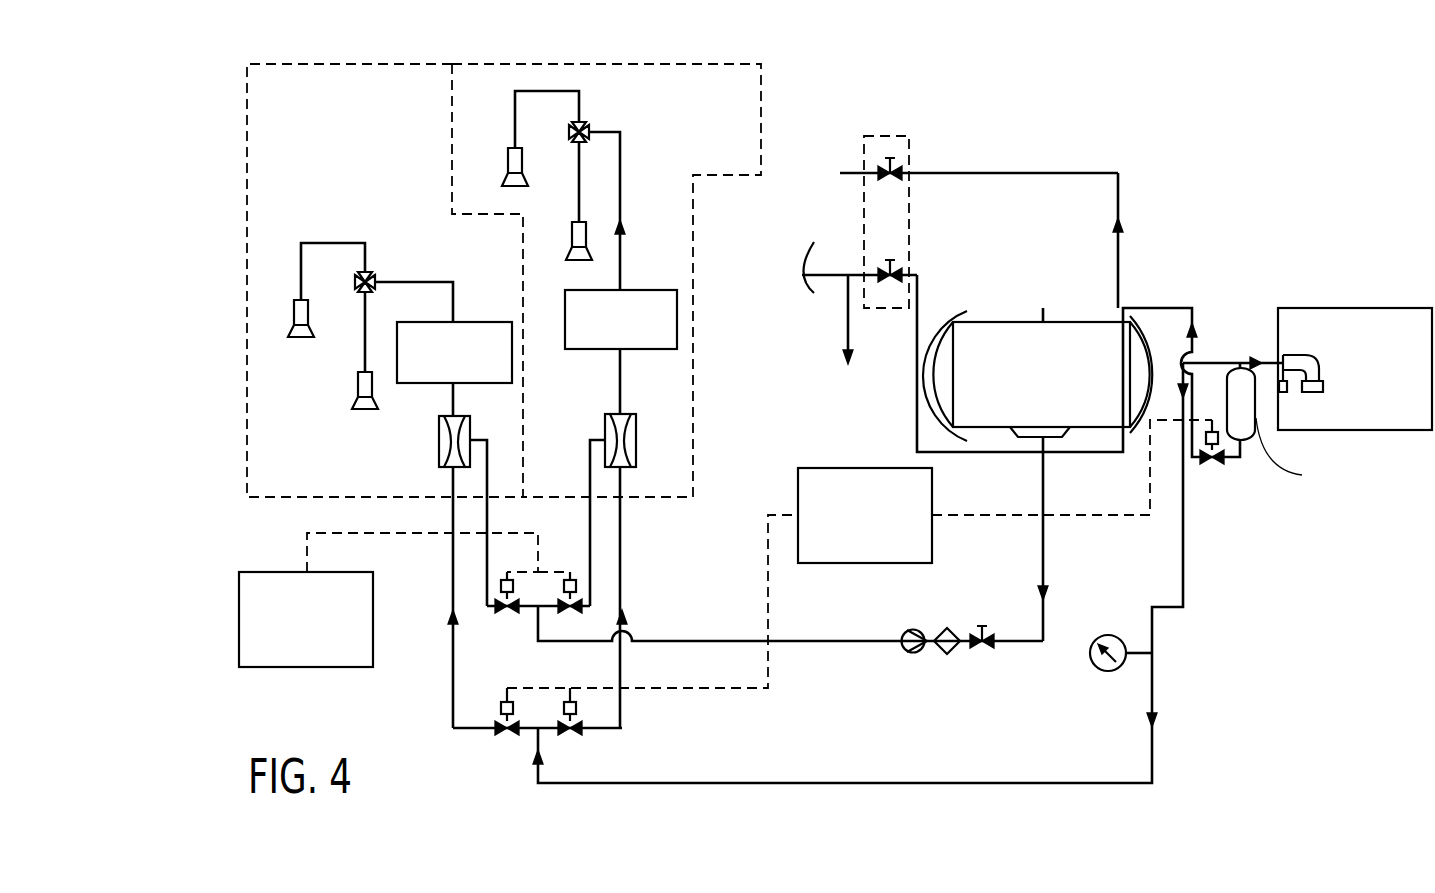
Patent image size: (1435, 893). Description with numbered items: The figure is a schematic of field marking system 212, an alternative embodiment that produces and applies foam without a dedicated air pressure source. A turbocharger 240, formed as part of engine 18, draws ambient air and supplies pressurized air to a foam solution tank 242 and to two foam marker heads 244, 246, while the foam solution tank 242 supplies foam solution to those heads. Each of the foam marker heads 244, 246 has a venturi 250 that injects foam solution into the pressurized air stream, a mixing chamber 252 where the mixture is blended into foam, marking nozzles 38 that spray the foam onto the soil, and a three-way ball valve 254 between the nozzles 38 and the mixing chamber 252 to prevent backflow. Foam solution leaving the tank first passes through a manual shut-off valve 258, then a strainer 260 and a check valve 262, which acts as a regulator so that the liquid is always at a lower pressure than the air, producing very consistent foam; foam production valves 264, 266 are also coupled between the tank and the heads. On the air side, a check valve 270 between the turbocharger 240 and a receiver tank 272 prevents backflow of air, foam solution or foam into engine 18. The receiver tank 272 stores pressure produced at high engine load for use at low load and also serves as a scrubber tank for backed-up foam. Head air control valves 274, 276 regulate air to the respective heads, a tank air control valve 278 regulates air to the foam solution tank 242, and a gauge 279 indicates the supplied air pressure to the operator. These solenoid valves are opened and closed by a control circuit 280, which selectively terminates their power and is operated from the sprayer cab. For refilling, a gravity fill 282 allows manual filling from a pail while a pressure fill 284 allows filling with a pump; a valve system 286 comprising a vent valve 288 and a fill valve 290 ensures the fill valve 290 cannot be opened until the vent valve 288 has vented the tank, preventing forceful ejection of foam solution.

The engine 18 is at (1396, 307).
The marking nozzles 38 is at (289, 330).
The field marking system 212 is at (1288, 156).
The turbocharger 240 is at (1293, 355).
The foam solution tank 242 is at (1012, 322).
The foam marker head 244 is at (247, 267).
The foam marker head 246 is at (606, 64).
The venturi 250 is at (439, 440).
The mixing chamber 252 is at (480, 322).
The three-way ball valve 254 is at (376, 282).
The valve 258 is at (979, 651).
The strainer 260 is at (945, 655).
The check valve 262 is at (905, 652).
The foam production valve 264 is at (505, 615).
The foam production valve 266 is at (567, 615).
The check valve 270 is at (1045, 556).
The receiver tank 272 is at (1245, 448).
The head air control valve 274 is at (503, 738).
The head air control valve 276 is at (578, 737).
The tank air control valve 278 is at (1207, 468).
The gauge 279 is at (1094, 668).
The control circuit 280 is at (239, 625).
The gravity fill 282 is at (811, 247).
The pressure fill 284 is at (845, 358).
The valve system 286 is at (916, 142).
The vent valve 288 is at (905, 170).
The fill valve 290 is at (898, 266).